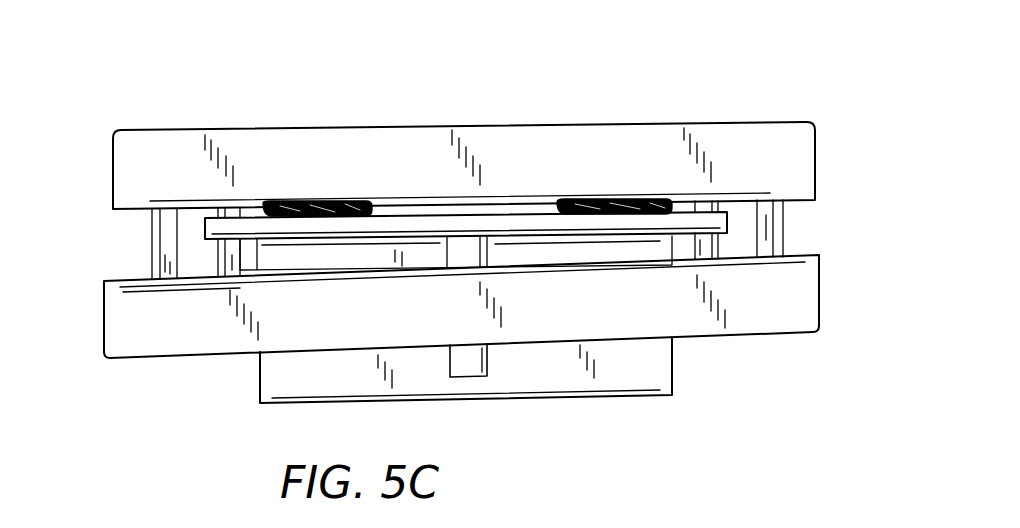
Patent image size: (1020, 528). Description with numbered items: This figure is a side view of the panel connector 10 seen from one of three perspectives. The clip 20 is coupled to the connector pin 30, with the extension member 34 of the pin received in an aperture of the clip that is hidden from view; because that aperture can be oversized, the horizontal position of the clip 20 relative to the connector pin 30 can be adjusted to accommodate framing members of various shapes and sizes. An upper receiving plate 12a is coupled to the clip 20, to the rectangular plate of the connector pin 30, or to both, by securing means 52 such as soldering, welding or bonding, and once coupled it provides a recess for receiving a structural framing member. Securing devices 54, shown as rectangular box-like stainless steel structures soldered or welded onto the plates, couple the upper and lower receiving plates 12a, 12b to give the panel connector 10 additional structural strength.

The panel connector 10 is at (181, 110).
The upper receiving plate 12a is at (814, 146).
The lower receiving plate 12b is at (753, 323).
The clip 20 is at (272, 390).
The connector pin 30 is at (415, 207).
The extension member 34 is at (482, 370).
The securing means 52 is at (625, 195).
The securing devices 54 is at (158, 248).